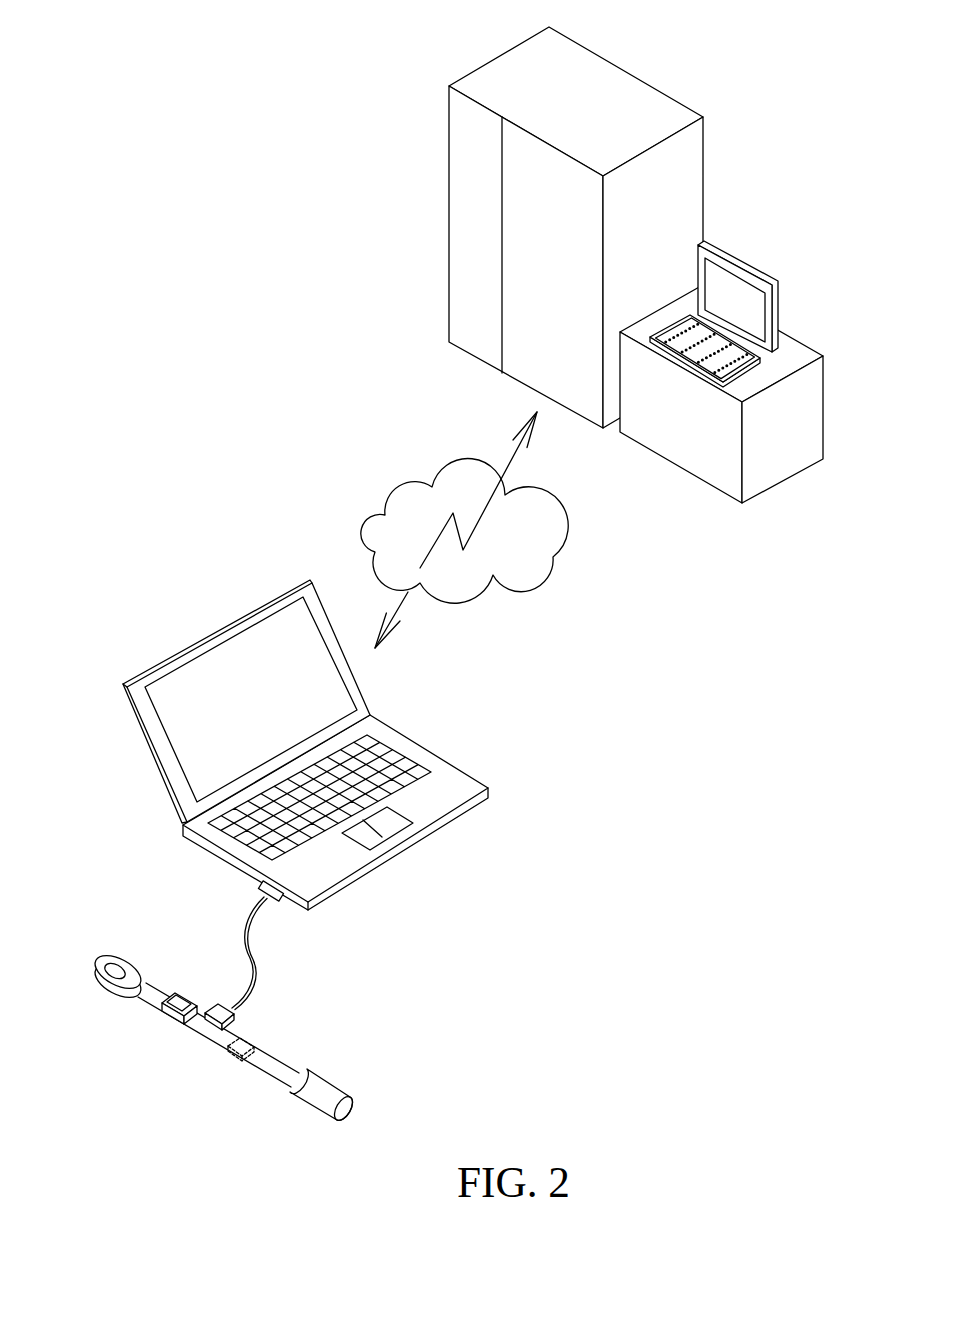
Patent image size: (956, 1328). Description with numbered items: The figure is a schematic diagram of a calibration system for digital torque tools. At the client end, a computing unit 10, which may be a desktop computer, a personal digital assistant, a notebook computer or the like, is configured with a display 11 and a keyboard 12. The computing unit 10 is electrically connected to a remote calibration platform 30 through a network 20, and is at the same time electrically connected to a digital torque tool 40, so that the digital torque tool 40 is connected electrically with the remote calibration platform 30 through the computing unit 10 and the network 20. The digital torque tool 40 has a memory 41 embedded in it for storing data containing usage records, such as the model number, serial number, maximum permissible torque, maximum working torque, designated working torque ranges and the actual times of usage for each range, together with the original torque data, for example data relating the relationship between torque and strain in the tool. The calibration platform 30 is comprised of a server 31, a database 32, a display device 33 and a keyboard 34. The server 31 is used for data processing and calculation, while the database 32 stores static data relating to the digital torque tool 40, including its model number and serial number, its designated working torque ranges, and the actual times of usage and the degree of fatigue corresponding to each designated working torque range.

The computing unit 10 is at (180, 630).
The display 11 is at (183, 738).
The keyboard 12 is at (393, 753).
The network 20 is at (408, 488).
The remote calibration platform 30 is at (455, 65).
The server 31 is at (456, 177).
The database 32 is at (812, 413).
The display device 33 is at (742, 262).
The keyboard 34 is at (690, 358).
The digital torque tool 40 is at (158, 1038).
The memory 41 is at (232, 1058).